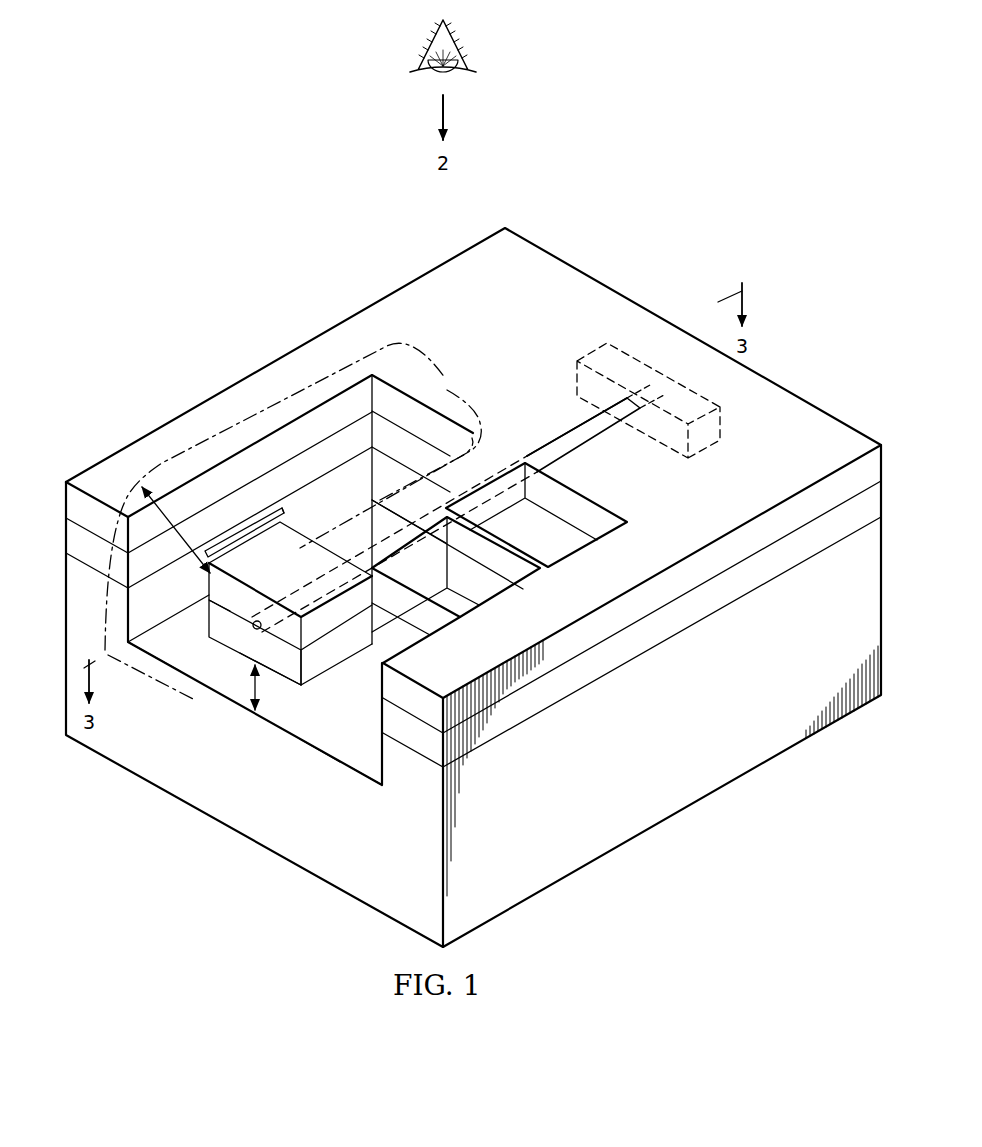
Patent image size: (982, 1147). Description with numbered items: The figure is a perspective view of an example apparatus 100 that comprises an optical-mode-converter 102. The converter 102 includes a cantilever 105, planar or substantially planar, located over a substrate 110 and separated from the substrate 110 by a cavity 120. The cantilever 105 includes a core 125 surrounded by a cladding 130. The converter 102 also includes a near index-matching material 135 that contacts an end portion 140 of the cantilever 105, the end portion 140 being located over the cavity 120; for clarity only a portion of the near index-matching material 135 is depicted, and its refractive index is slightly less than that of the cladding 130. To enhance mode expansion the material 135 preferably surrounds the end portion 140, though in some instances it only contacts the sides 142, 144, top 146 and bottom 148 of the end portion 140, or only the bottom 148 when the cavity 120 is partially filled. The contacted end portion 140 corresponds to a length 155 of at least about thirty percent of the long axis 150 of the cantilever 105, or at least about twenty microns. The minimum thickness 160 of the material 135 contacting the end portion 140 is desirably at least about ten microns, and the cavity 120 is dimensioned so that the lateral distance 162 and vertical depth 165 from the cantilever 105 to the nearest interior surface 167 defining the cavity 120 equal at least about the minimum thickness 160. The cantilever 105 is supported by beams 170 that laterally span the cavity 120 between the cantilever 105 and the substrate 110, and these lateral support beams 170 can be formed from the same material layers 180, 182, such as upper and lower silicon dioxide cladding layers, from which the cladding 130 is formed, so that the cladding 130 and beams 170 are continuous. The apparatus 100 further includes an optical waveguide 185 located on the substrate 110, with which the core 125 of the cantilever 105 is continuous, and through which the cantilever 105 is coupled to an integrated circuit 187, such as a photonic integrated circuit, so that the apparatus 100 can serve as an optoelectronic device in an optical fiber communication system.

The apparatus 100 is at (170, 276).
The optical-mode-converter 102 is at (800, 394).
The cantilever 105 is at (360, 483).
The substrate 110 is at (718, 778).
The cavity 120 is at (330, 733).
The core 125 is at (537, 444).
The cladding 130 is at (445, 436).
The near index-matching material 135 is at (150, 466).
The end portion 140 is at (248, 527).
The side 142 is at (198, 622).
The side 144 is at (312, 672).
The top 146 is at (213, 626).
The bottom 148 is at (255, 710).
The long axis 150 is at (393, 522).
The length 155 is at (304, 538).
The minimum thickness 160 is at (176, 544).
The lateral distance 162 is at (378, 665).
The vertical depth 165 is at (250, 688).
The interior surface 167 is at (357, 762).
The beams 170 is at (463, 606).
The material layer 180 is at (772, 570).
The material layer 182 is at (792, 515).
The optical waveguide 185 is at (596, 449).
The integrated circuit 187 is at (592, 358).